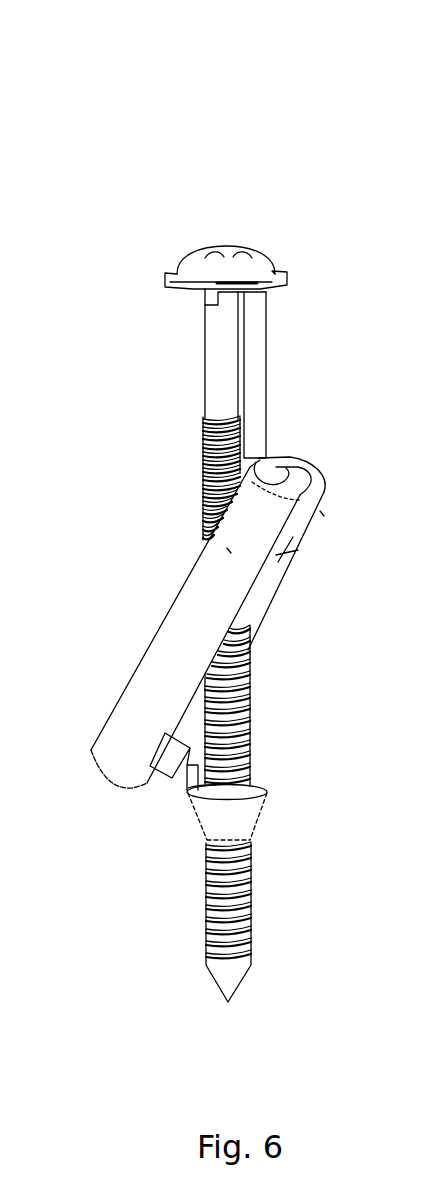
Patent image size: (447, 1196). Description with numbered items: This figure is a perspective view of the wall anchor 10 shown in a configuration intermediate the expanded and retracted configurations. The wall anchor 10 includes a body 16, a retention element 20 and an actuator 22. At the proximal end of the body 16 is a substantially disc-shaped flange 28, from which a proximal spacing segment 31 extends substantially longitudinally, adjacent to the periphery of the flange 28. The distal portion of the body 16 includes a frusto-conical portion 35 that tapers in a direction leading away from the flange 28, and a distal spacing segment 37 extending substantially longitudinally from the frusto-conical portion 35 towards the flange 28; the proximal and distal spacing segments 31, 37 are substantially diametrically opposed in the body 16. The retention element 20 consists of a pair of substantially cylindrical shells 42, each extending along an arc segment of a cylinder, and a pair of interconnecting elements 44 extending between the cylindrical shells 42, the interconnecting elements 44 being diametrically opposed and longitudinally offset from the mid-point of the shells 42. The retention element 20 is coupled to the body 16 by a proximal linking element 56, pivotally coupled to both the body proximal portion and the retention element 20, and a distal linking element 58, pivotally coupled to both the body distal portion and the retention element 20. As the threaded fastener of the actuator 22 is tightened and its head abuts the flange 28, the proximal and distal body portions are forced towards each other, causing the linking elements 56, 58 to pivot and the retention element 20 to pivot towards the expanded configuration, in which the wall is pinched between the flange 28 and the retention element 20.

The wall anchor 10 is at (138, 160).
The body 16 is at (281, 385).
The retention element 20 is at (150, 613).
The actuator 22 is at (277, 747).
The flange 28 is at (168, 276).
The proximal spacing segment 31 is at (265, 327).
The frusto-conical portion 35 is at (203, 820).
The distal spacing segment 37 is at (187, 790).
The cylindrical shells 42 is at (182, 528).
The interconnecting elements 44 is at (268, 592).
The proximal linking element 56 is at (267, 468).
The distal linking element 58 is at (190, 742).